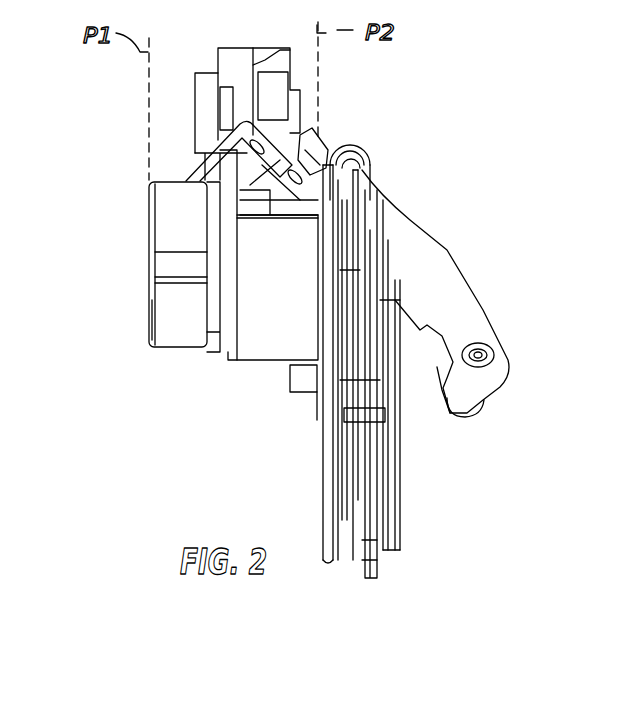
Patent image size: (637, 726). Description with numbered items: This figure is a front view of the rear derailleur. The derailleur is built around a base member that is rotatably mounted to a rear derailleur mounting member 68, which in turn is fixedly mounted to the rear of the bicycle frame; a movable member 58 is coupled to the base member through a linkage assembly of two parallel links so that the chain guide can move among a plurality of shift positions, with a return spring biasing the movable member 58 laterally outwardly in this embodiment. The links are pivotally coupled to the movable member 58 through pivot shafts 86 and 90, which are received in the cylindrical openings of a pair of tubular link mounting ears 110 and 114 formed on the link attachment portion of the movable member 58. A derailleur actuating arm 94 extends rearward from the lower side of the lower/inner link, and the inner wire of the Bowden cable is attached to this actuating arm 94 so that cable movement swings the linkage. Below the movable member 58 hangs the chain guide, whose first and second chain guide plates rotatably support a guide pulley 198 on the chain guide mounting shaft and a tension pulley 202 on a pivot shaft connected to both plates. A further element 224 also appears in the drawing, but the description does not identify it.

The movable member 58 is at (218, 378).
The rear derailleur mounting member 68 is at (234, 53).
The pivot shaft 86 is at (278, 145).
The pivot shaft 90 is at (315, 160).
The derailleur actuating arm 94 is at (457, 262).
The tubular link mounting ear 110 is at (148, 250).
The tubular link mounting ear 114 is at (340, 148).
The guide pulley 198 is at (366, 262).
The tension pulley 202 is at (370, 575).
The gear housing 224 is at (163, 314).